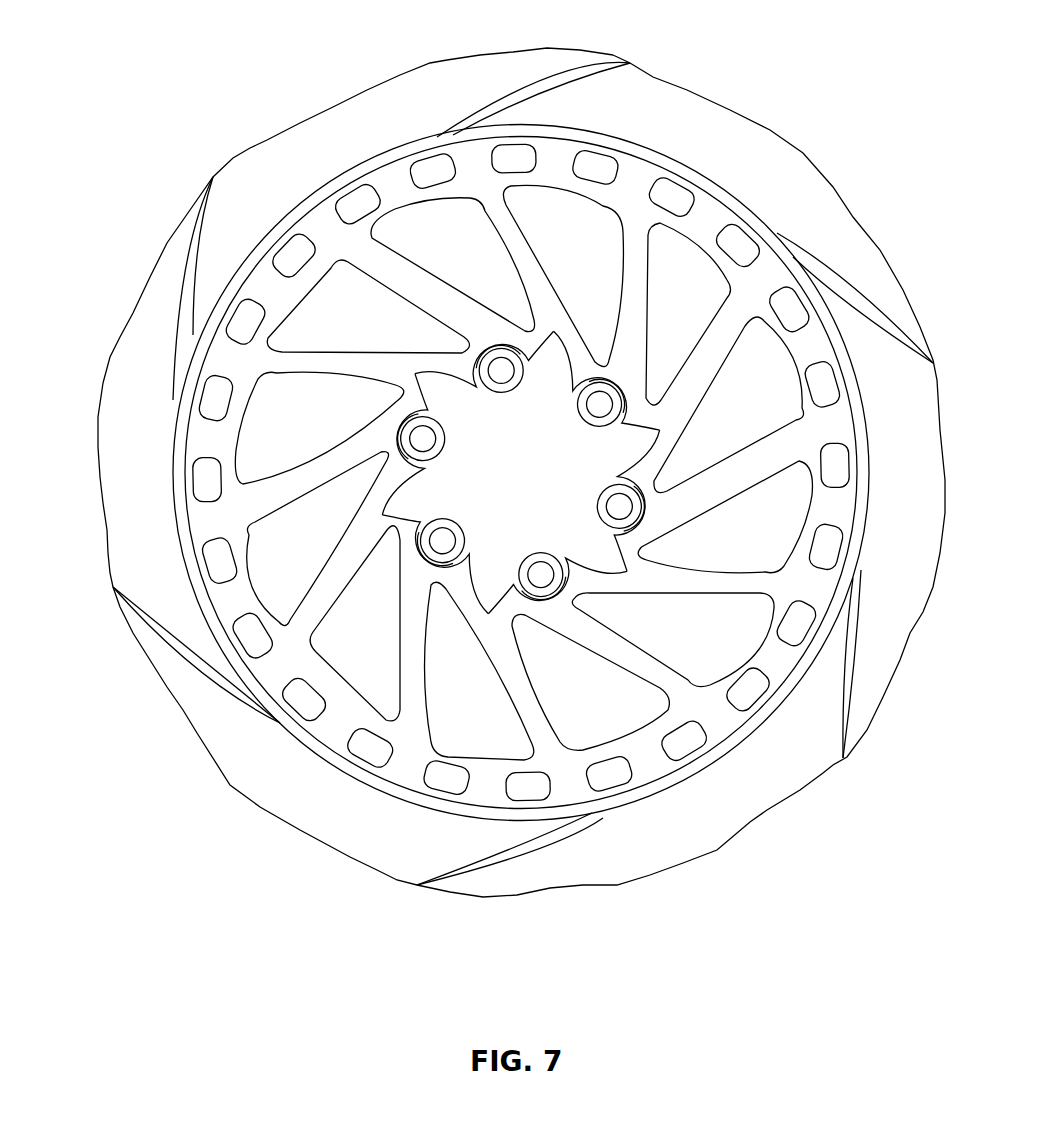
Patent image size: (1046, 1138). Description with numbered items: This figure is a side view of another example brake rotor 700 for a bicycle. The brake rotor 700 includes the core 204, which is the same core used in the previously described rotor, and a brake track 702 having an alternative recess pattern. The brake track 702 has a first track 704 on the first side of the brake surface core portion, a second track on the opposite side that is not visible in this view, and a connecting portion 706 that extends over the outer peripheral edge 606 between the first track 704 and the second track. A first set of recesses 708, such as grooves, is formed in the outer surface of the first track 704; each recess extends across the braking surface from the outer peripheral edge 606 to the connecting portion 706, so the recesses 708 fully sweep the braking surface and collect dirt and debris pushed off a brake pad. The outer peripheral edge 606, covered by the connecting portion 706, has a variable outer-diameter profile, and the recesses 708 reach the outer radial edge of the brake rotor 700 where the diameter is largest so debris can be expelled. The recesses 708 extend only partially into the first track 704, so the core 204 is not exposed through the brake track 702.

The brake rotor 700 is at (497, 448).
The brake track 702 is at (343, 128).
The first track 704 is at (413, 93).
The connecting portion 706 is at (473, 58).
The recesses 708 is at (536, 78).
The outer peripheral edge 606 is at (623, 140).
The core 204 is at (333, 243).